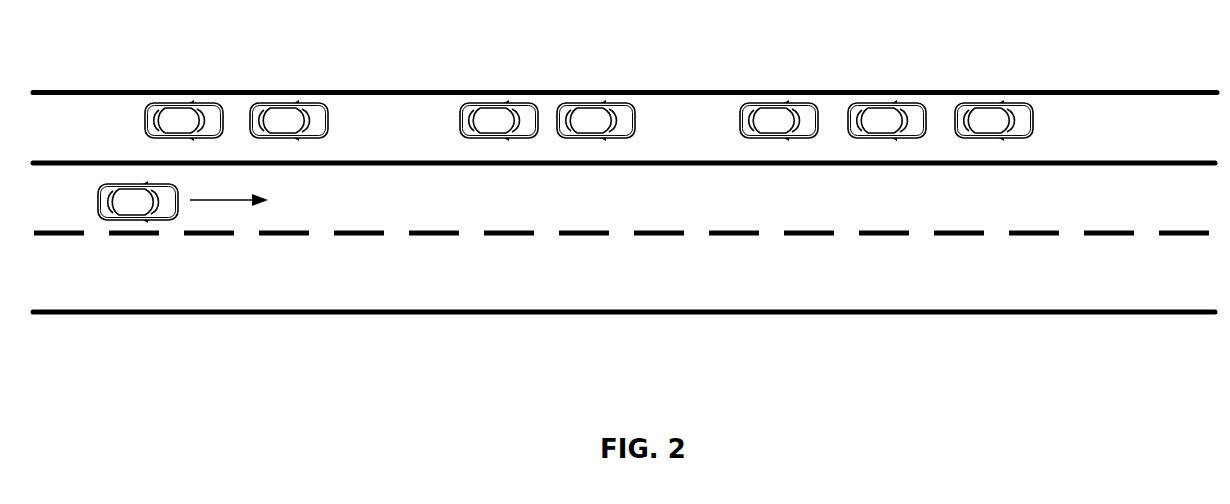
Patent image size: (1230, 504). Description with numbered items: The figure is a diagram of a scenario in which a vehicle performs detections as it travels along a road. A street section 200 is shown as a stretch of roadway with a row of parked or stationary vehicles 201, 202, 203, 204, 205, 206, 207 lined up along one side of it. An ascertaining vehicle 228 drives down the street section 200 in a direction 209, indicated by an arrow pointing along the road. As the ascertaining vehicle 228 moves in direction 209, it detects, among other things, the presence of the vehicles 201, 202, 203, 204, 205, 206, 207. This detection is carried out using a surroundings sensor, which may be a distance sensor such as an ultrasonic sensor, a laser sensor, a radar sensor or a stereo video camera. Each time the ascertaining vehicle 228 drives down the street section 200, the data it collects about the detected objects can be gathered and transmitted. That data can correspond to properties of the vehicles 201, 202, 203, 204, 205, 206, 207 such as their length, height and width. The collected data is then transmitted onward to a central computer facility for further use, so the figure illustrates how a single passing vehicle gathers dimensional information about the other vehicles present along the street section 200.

The street section 200 is at (99, 47).
The vehicle 201 is at (184, 129).
The vehicle 202 is at (289, 129).
The vehicle 203 is at (499, 129).
The vehicle 204 is at (596, 129).
The vehicle 205 is at (779, 129).
The vehicle 206 is at (887, 128).
The vehicle 207 is at (994, 129).
The ascertaining vehicle 228 is at (108, 202).
The direction 209 is at (253, 200).